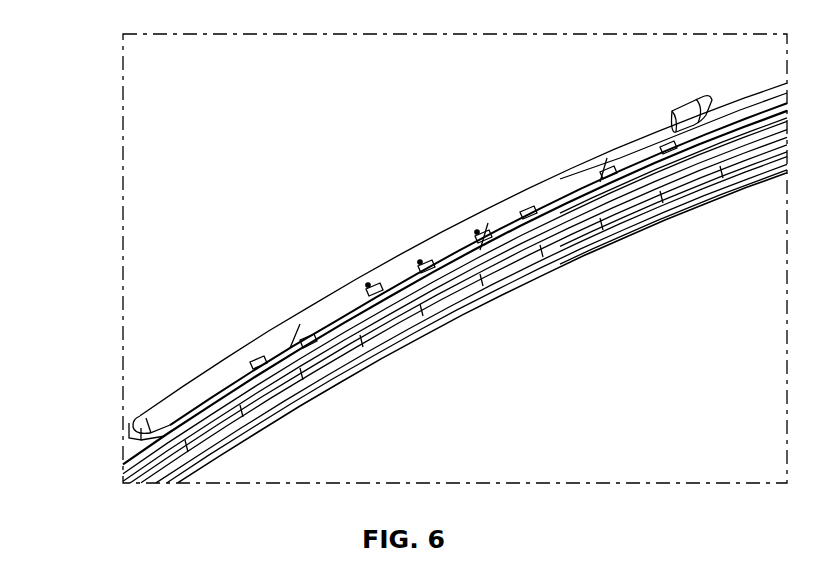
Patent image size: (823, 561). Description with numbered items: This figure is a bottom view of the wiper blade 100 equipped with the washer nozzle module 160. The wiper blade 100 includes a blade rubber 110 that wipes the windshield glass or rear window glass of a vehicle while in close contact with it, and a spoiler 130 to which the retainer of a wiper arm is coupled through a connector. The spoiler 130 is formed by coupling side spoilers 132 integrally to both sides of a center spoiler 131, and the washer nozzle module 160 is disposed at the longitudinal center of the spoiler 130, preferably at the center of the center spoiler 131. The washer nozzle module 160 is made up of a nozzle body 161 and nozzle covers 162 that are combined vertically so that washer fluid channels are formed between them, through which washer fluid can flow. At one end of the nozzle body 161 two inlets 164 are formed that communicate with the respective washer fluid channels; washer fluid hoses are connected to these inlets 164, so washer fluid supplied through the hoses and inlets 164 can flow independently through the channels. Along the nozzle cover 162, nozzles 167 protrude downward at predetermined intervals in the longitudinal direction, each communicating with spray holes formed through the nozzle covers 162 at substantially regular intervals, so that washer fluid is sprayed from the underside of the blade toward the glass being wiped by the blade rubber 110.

The wiper blade 100 is at (258, 107).
The blade rubber 110 is at (403, 350).
The spoiler 130 is at (100, 377).
The center spoiler 131 is at (178, 397).
The side spoiler 132 is at (126, 428).
The washer nozzle module 160 is at (463, 234).
The nozzle body 161 is at (392, 252).
The nozzle cover 162 is at (368, 288).
The inlet 164 is at (676, 108).
The nozzle 167 is at (420, 300).